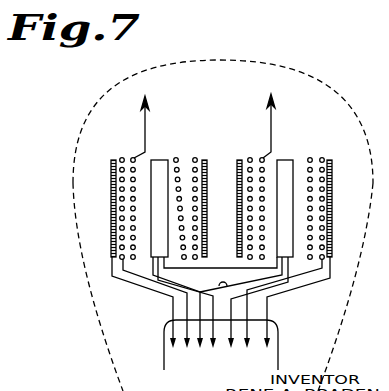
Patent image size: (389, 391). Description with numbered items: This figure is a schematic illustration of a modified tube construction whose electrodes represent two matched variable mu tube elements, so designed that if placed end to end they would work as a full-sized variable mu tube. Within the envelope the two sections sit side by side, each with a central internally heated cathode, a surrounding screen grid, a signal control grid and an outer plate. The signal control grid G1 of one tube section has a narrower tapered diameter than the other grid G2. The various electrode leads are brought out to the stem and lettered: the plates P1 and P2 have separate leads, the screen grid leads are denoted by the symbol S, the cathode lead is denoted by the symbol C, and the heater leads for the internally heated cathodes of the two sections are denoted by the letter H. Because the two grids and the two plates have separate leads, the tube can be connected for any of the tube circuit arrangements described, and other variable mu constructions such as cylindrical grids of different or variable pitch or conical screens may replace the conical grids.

The signal control grid G1 is at (177, 157).
The signal control grid G2 is at (311, 157).
The plate P1 is at (146, 314).
The plate P2 is at (294, 314).
The screen grid lead S is at (222, 314).
The cathode lead C is at (217, 313).
The heater lead H is at (223, 313).